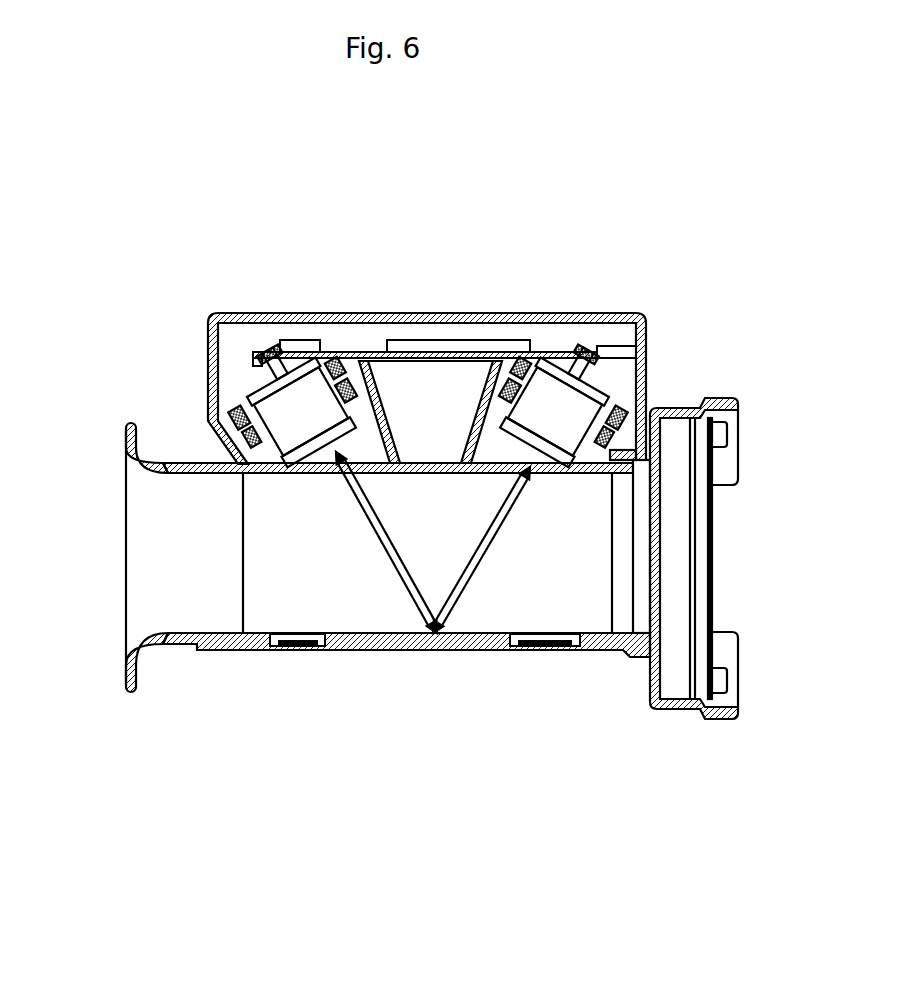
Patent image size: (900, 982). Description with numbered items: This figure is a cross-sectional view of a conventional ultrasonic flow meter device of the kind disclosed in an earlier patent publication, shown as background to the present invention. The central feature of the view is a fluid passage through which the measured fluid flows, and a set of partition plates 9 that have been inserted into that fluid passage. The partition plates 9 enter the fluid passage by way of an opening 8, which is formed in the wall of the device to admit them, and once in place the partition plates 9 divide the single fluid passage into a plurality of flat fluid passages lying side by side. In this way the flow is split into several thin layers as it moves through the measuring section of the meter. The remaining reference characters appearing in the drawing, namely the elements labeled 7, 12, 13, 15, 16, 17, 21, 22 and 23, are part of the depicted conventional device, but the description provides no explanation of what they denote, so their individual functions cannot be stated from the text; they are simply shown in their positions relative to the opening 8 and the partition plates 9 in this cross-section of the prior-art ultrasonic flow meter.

The measuring tube 7 is at (378, 650).
The opening 8 is at (376, 455).
The partition plates 9 is at (280, 580).
The bottom sensor 12 is at (568, 650).
The bottom sensor 13 is at (553, 650).
The sensor mount 15 is at (573, 472).
The left ultrasonic transducer 16 is at (300, 425).
The right ultrasonic transducer 17 is at (570, 425).
The housing 21 is at (577, 340).
The circuit board 22 is at (407, 343).
The electronic component 23 is at (300, 340).